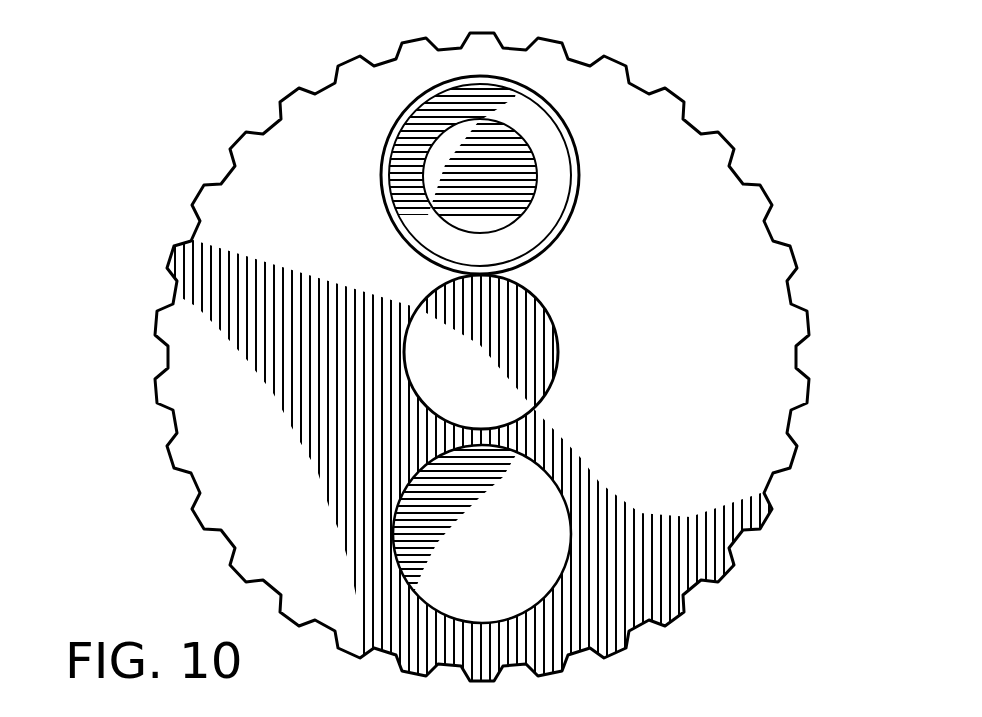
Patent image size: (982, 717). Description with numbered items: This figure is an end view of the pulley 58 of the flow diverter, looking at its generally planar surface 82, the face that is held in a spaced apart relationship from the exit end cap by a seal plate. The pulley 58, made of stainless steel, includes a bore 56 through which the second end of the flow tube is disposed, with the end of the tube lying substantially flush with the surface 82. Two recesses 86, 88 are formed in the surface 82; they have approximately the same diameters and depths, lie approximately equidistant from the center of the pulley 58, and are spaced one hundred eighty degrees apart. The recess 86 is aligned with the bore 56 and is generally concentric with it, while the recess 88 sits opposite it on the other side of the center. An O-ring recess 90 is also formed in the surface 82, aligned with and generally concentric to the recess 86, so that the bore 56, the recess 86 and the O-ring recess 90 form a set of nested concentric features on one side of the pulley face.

The pulley 58 is at (687, 155).
The surface 82 is at (711, 327).
The O-ring recess 90 is at (570, 220).
The recess 86 is at (438, 252).
The bore 56 is at (517, 133).
The recess 88 is at (562, 487).